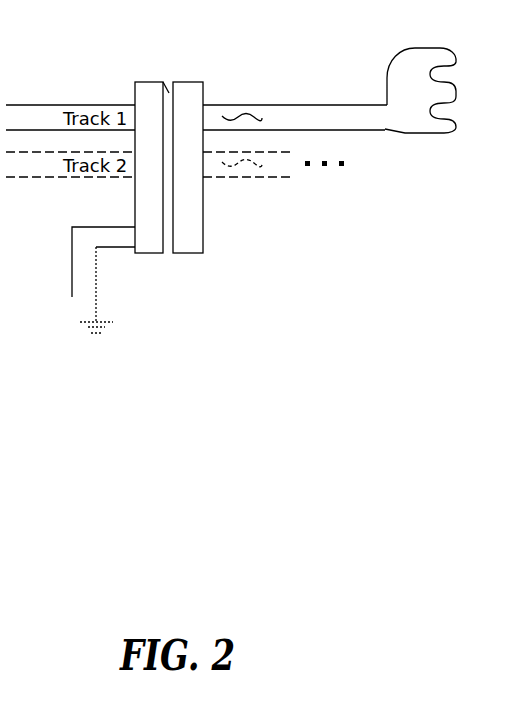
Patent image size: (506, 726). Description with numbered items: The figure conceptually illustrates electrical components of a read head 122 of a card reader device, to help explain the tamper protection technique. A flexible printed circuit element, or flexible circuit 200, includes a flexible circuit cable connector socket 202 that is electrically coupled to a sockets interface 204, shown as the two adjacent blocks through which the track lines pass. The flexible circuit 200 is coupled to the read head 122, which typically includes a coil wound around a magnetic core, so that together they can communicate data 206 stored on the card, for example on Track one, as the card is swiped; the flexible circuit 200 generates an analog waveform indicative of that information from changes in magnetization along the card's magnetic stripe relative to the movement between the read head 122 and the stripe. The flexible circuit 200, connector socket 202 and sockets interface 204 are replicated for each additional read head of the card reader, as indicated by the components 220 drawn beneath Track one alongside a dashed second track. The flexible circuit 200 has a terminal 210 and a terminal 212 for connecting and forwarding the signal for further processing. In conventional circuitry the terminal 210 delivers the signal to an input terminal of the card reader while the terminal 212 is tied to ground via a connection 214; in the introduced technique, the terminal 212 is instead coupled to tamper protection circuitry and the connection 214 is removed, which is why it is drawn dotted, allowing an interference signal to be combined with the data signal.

The read head 122 is at (436, 48).
The flexible printed circuit element 200 is at (318, 105).
The flexible circuit cable connector socket 202 is at (195, 82).
The sockets interface 204 is at (143, 82).
The data 206 is at (253, 117).
The terminal 210 is at (72, 243).
The terminal 212 is at (115, 250).
The connection 214 is at (97, 291).
The components 220 is at (350, 135).